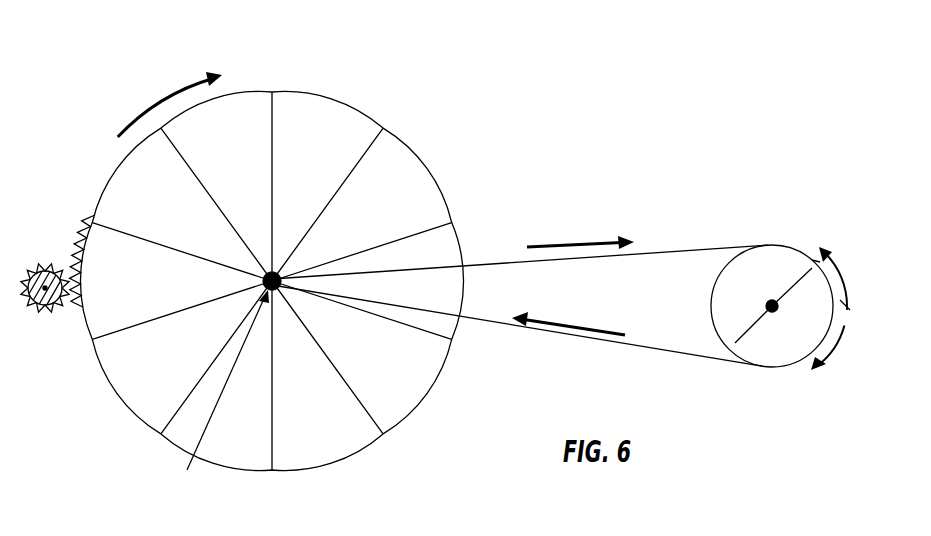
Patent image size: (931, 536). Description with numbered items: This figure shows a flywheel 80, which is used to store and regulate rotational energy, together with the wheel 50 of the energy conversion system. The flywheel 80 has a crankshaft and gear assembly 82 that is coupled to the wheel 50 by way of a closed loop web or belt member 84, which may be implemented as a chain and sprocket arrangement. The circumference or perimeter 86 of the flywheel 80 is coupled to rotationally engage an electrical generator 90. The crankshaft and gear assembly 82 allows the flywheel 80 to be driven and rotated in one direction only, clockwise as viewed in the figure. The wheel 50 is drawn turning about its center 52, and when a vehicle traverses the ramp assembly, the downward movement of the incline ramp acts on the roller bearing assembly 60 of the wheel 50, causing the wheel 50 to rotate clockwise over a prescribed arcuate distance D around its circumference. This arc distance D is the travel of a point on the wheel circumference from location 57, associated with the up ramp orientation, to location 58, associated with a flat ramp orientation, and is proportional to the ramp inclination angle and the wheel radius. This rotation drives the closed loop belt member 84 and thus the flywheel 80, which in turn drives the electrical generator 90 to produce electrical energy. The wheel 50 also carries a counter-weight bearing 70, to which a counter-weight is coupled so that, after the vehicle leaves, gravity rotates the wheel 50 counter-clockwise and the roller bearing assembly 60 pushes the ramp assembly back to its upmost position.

The wheel 50 is at (760, 370).
The pulley axis 52 is at (771, 302).
The location 57 is at (816, 260).
The location 58 is at (850, 296).
The roller bearing assembly 60 is at (807, 273).
The counter-weight bearing 70 is at (740, 335).
The flywheel 80 is at (404, 88).
The crankshaft and gear assembly 82 is at (268, 272).
The closed loop web or belt member 84 is at (672, 248).
The circumference or perimeter 86 is at (340, 98).
The electrical generator 90 is at (50, 268).
The arcuate distance D is at (838, 268).